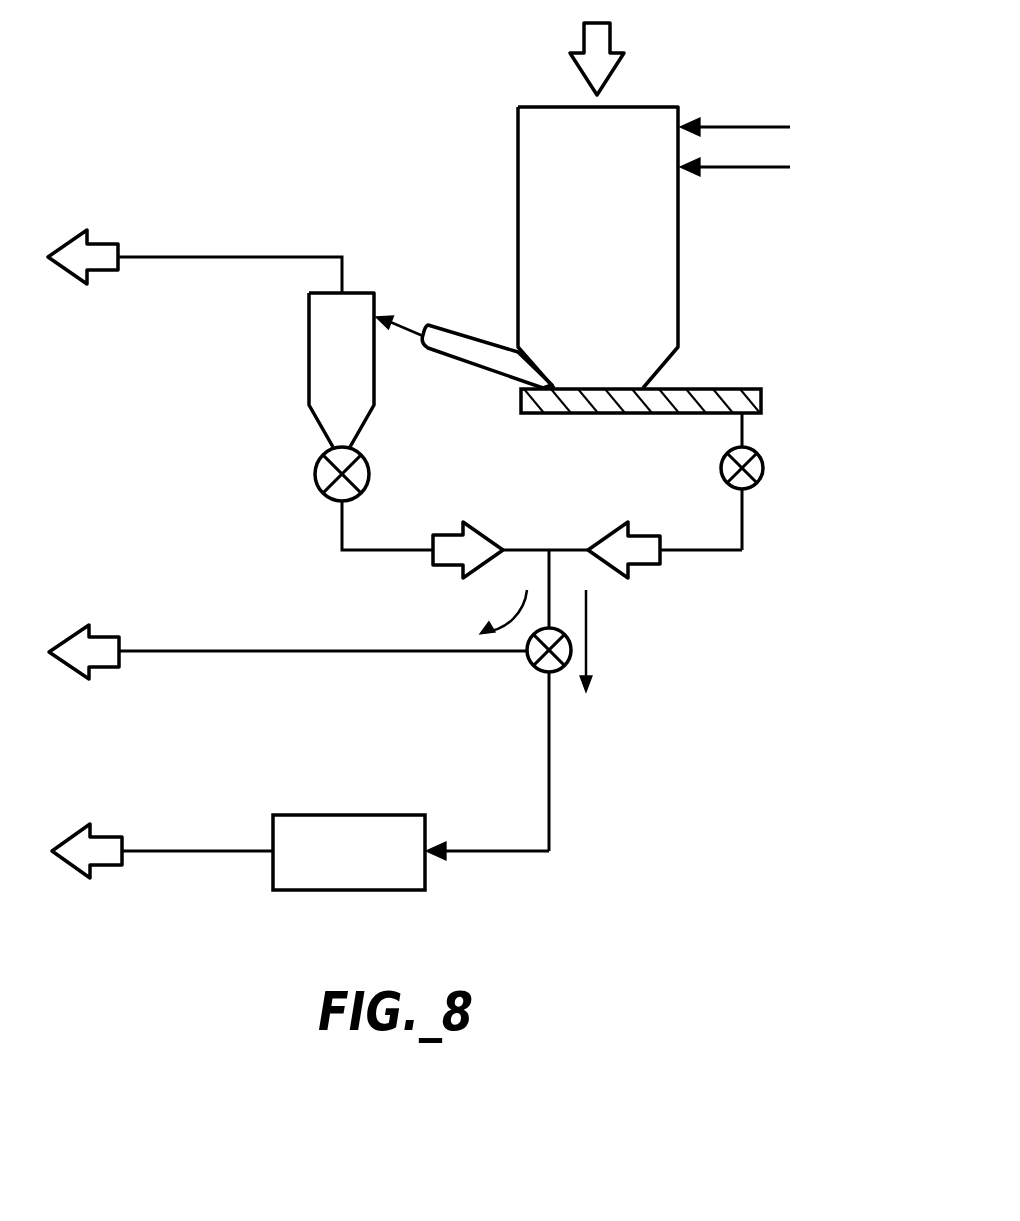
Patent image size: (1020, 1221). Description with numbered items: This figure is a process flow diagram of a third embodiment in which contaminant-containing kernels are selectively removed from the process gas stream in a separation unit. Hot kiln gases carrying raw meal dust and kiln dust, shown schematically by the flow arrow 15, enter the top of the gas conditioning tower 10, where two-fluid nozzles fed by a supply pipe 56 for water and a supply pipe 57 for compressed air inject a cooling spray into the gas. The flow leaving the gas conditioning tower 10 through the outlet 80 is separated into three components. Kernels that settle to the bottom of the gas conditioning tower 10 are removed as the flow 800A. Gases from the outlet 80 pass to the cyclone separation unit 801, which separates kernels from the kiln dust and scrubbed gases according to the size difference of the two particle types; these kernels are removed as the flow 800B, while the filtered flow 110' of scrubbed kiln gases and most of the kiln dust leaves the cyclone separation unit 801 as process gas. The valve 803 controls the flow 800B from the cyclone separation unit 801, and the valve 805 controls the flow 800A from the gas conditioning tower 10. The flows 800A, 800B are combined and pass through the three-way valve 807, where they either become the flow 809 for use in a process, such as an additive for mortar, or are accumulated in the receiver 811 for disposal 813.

The gas conditioning tower 10 is at (622, 233).
The flow arrow 15 is at (612, 42).
The supply pipe 56 is at (722, 126).
The supply pipe 57 is at (725, 168).
The outlet 80 is at (492, 340).
The filtered flow 110' is at (195, 247).
The cyclone separation unit 801 is at (368, 365).
The valve 803 is at (313, 478).
The flow 800A is at (600, 537).
The flow 800B is at (478, 525).
The valve 805 is at (765, 472).
The three-way valve 807 is at (527, 656).
The flow 809 is at (98, 637).
The receiver 811 is at (370, 867).
The disposal 813 is at (100, 837).